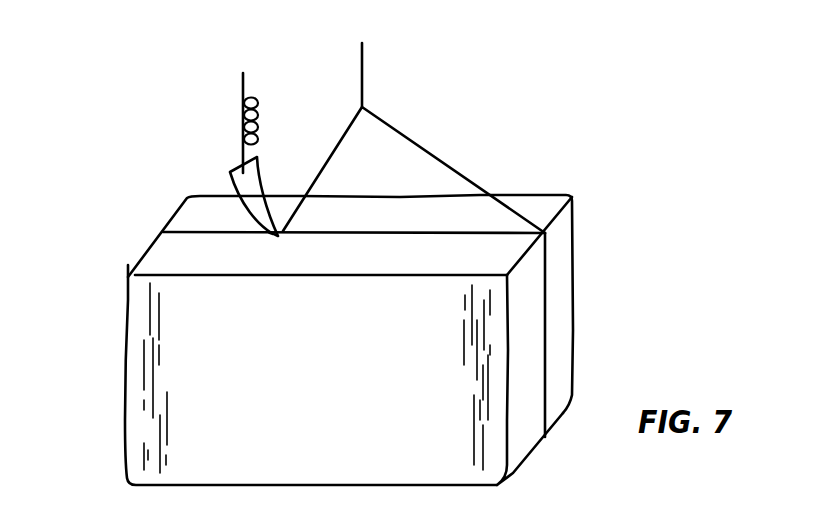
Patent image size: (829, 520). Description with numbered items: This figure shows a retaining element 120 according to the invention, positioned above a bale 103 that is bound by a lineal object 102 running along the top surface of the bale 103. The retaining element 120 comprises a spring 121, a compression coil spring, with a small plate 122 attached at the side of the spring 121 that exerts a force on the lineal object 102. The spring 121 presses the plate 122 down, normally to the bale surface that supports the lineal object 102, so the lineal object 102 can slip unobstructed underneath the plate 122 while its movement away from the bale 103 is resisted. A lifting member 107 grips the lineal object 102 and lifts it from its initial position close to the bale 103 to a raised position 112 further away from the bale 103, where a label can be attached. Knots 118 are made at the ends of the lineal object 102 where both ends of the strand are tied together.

The lineal object 102 is at (460, 232).
The bale 103 is at (138, 322).
The lifting member 107 is at (363, 73).
The raised position 112 is at (444, 160).
The knot 118 is at (163, 233).
The retaining element 120 is at (253, 142).
The spring 121 is at (243, 82).
The plate 122 is at (253, 180).